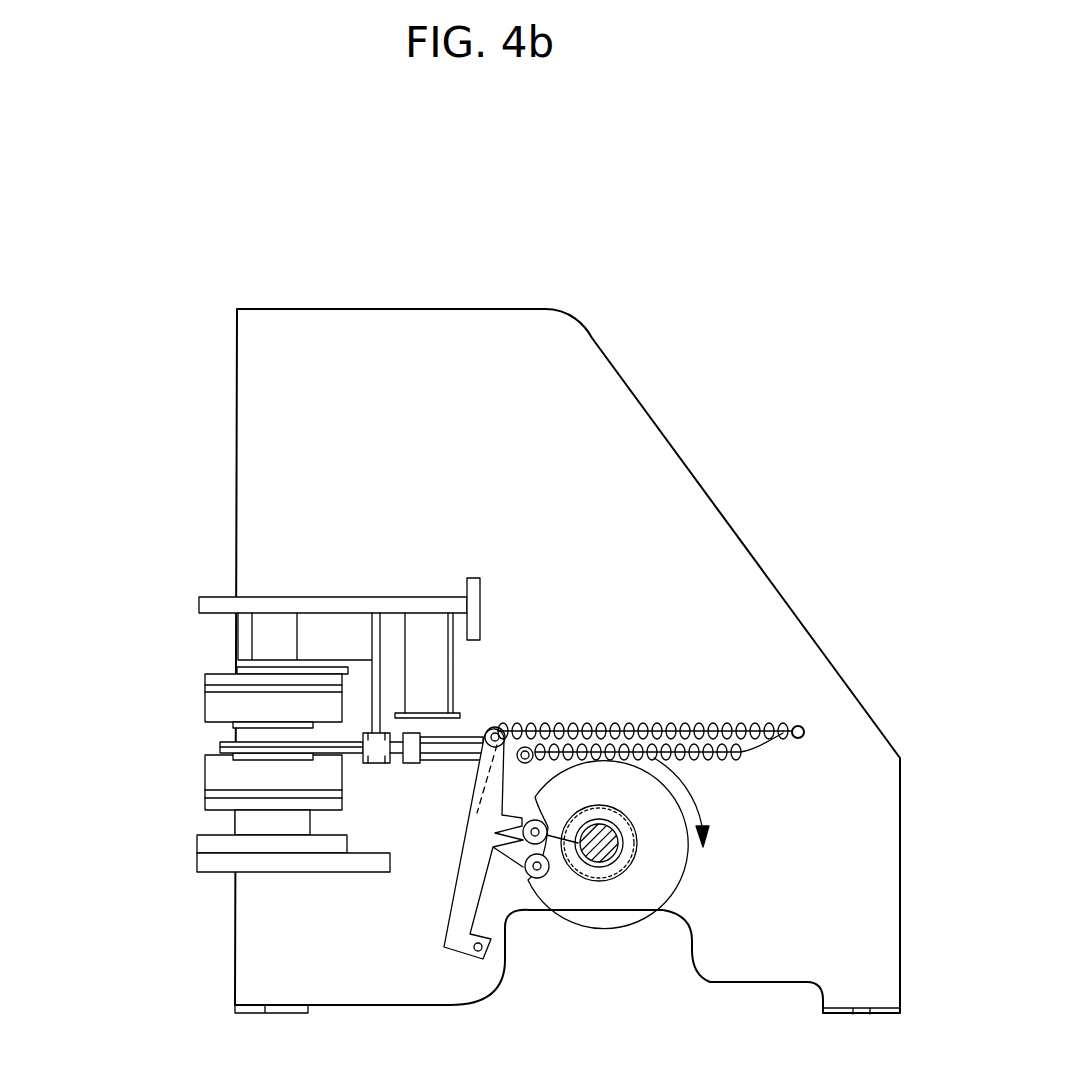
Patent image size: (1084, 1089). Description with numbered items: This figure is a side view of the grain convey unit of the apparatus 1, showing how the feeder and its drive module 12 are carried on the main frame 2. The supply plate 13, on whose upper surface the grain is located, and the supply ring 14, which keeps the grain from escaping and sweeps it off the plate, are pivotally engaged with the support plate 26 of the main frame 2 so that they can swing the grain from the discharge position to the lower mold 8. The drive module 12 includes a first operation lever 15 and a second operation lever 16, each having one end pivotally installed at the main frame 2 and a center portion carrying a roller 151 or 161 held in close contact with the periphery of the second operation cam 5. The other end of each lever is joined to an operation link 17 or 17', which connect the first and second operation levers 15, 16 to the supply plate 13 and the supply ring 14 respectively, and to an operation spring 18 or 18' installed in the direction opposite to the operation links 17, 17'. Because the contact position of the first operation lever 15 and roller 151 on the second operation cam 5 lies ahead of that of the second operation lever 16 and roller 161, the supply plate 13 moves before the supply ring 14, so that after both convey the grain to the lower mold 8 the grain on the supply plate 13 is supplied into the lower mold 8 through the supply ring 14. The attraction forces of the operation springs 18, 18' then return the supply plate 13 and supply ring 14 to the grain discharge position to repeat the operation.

The cutting apparatus 1 is at (572, 586).
The main frame 2 is at (188, 457).
The second operation cam 5 is at (675, 892).
The lower mold 8 is at (212, 778).
The drive module 12 is at (750, 378).
The supply plate 13 is at (213, 747).
The supply ring 14 is at (235, 740).
The first operation lever 15 is at (508, 726).
The second operation lever 16 is at (538, 756).
The operation link 17 is at (580, 576).
The operation link 17' is at (555, 593).
The operation spring 18 is at (704, 671).
The operation spring 18' is at (667, 715).
The support plate 26 is at (207, 608).
The roller 151 is at (600, 862).
The roller 161 is at (575, 845).